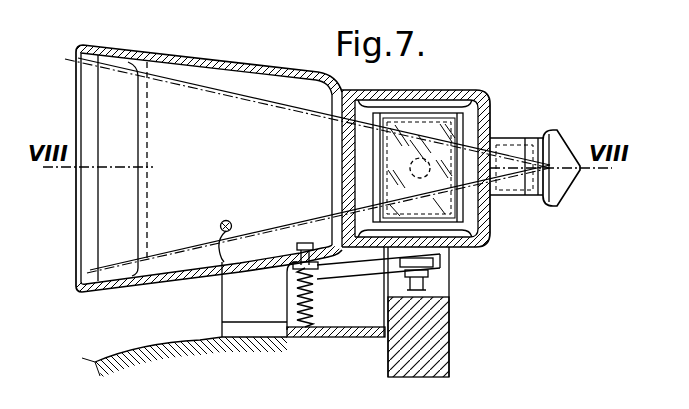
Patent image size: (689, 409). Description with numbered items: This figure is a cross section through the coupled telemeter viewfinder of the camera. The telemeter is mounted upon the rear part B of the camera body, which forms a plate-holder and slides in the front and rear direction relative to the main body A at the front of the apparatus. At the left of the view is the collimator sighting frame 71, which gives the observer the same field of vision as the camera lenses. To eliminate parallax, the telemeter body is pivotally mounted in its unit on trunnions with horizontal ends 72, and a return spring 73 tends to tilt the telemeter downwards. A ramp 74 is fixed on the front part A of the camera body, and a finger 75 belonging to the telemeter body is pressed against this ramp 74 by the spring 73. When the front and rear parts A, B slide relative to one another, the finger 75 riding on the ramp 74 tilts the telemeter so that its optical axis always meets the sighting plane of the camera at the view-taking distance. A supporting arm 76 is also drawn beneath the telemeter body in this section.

The collimator sighting frame 71 is at (75, 284).
The trunnions with horizontal ends 72 is at (423, 170).
The return spring 73 is at (308, 277).
The ramp 74 is at (240, 235).
The finger 75 is at (225, 220).
The supporting arm 76 is at (340, 273).
The main body A is at (108, 358).
The rear part B is at (449, 357).